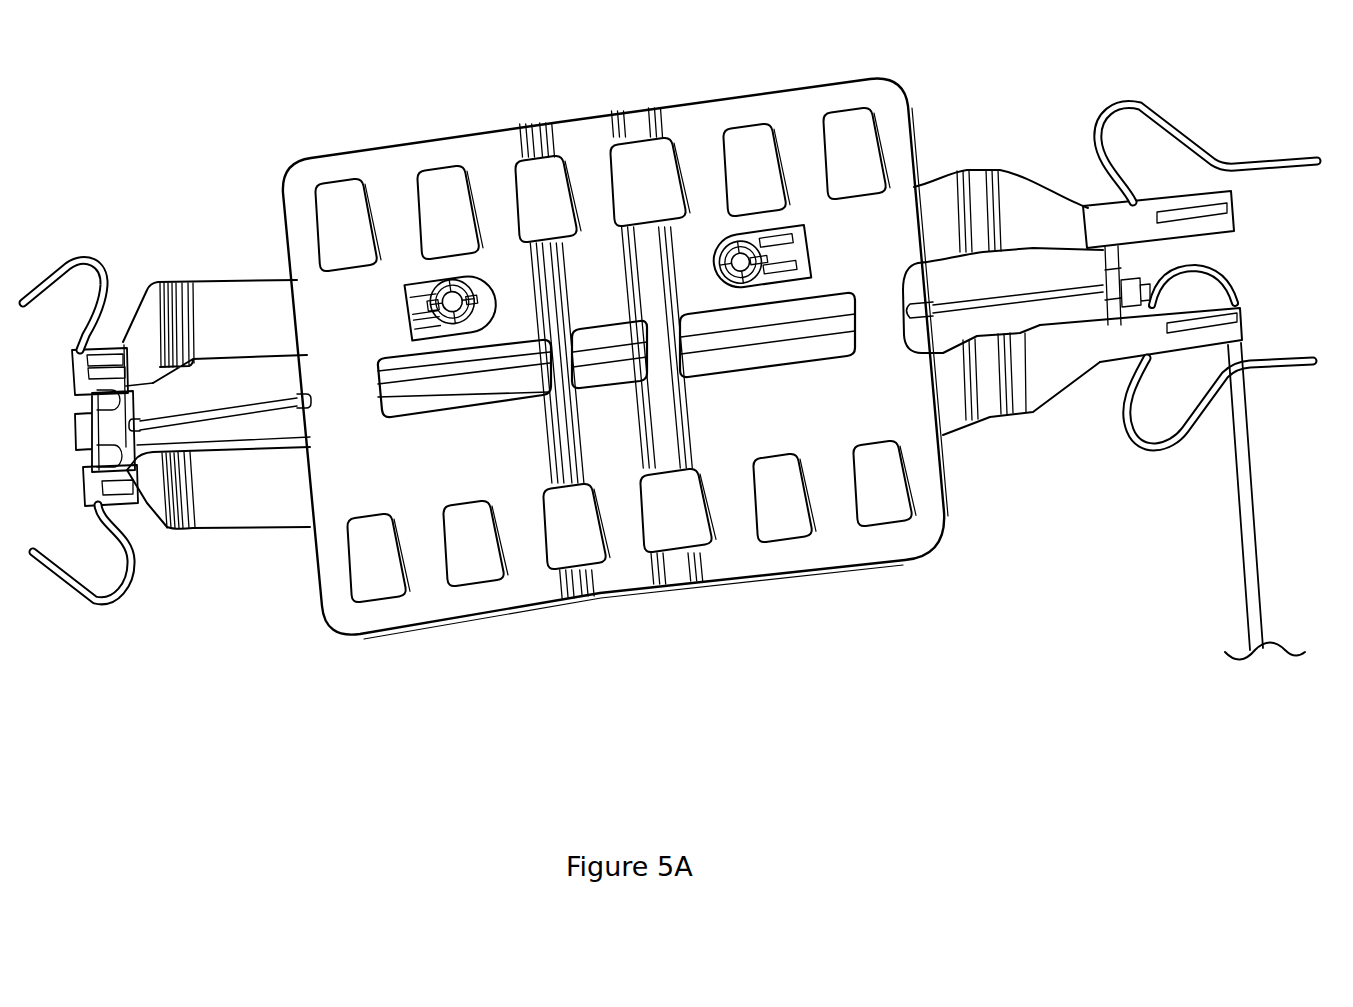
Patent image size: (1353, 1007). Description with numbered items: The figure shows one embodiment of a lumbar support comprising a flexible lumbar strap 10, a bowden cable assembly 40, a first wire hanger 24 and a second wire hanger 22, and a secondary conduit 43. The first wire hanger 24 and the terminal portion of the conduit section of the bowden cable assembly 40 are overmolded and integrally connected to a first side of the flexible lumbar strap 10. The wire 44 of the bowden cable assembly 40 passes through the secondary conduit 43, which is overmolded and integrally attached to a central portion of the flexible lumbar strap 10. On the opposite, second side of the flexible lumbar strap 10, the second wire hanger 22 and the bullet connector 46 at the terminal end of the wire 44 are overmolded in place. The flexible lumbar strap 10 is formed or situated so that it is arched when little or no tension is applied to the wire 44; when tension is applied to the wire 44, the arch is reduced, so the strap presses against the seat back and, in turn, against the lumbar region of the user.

The flexible lumbar strap 10 is at (638, 56).
The second wire hanger 22 is at (64, 246).
The first wire hanger 24 is at (1246, 158).
The bowden cable assembly 40 is at (1282, 596).
The secondary conduit 43 is at (402, 396).
The wire 44 is at (988, 292).
The bullet connector 46 is at (140, 406).